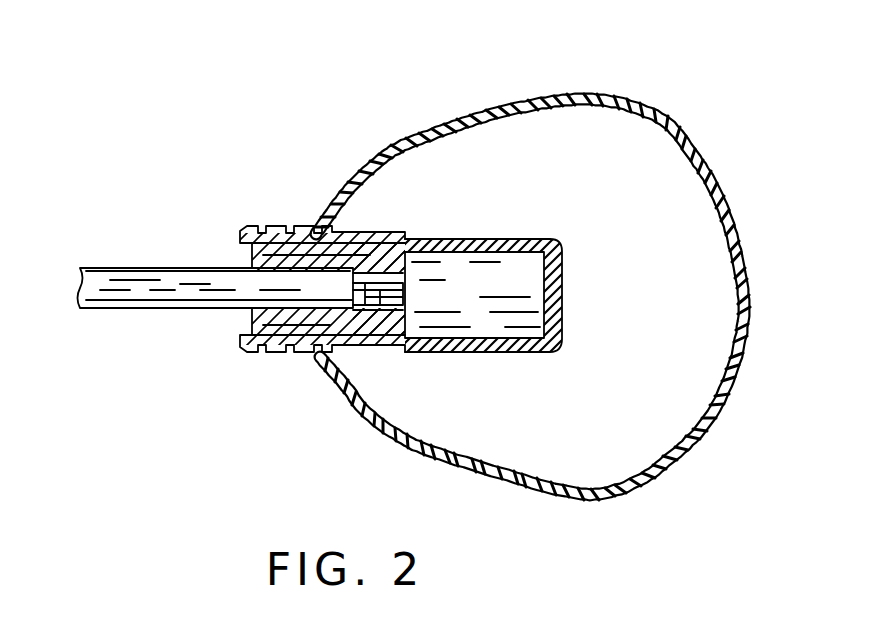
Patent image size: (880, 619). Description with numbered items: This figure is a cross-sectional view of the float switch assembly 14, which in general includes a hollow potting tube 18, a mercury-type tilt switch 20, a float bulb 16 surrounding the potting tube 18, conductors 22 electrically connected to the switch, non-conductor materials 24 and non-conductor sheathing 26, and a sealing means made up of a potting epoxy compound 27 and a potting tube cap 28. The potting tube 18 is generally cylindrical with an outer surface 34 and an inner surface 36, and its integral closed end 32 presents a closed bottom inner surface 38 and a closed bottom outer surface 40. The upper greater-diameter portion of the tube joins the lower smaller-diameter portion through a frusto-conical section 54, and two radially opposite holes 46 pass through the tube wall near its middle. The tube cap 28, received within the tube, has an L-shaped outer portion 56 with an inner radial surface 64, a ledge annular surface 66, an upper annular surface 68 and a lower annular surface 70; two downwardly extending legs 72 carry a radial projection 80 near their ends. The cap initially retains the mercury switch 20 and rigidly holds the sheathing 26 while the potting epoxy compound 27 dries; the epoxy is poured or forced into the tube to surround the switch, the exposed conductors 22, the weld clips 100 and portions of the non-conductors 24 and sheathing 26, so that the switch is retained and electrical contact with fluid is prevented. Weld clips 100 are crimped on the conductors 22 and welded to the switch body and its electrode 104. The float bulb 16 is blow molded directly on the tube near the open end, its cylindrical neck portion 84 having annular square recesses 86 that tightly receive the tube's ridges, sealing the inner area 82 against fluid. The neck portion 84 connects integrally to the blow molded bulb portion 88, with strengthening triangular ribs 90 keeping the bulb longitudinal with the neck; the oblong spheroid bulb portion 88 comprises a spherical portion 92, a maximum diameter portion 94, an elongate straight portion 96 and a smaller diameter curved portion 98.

The float switch assembly 14 is at (183, 120).
The float bulb 16 is at (670, 88).
The potting tube 18 is at (420, 238).
The mercury-type tilt switch 20 is at (550, 238).
The conductors 22 is at (392, 240).
The non-conductor materials 24 is at (382, 293).
The non-conductor sheathing 26 is at (122, 283).
The potting epoxy compound 27 is at (338, 262).
The potting tube cap 28 is at (232, 258).
The closed end 32 is at (577, 245).
The outer surface 34 is at (518, 355).
The inner surface 36 is at (487, 348).
The closed bottom inner surface 38 is at (552, 315).
The closed bottom outer surface 40 is at (570, 290).
The holes 46 is at (352, 230).
The frusto-conical section 54 is at (432, 350).
The outer portion 56 is at (252, 262).
The inner radial surface 64 is at (247, 325).
The ledge annular surface 66 is at (248, 320).
The upper annular surface 68 is at (245, 335).
The lower annular surface 70 is at (280, 265).
The legs 72 is at (322, 232).
The radial projection 80 is at (345, 262).
The inner area 82 is at (652, 317).
The neck portion 84 is at (248, 236).
The annular square recesses 86 is at (263, 232).
The blow molded bulb portion 88 is at (480, 122).
The strengthening triangular ribs 90 is at (318, 240).
The spherical portion 92 is at (745, 212).
The maximum diameter portion 94 is at (593, 497).
The elongate straight portion 96 is at (508, 105).
The smaller diameter curved portion 98 is at (368, 160).
The weld clips 100 is at (405, 240).
The electrode 104 is at (410, 290).